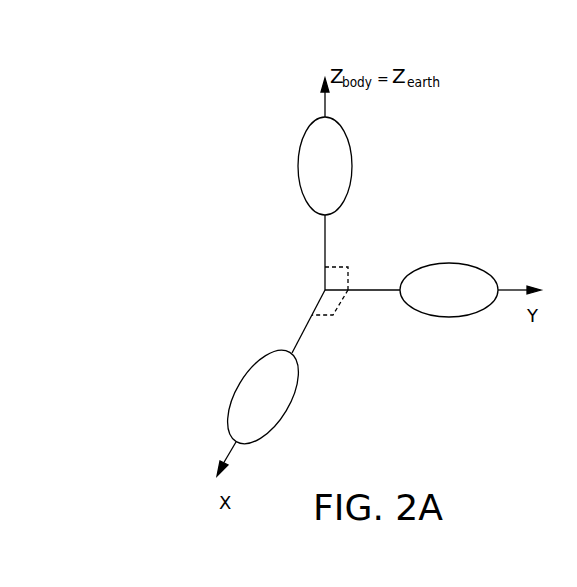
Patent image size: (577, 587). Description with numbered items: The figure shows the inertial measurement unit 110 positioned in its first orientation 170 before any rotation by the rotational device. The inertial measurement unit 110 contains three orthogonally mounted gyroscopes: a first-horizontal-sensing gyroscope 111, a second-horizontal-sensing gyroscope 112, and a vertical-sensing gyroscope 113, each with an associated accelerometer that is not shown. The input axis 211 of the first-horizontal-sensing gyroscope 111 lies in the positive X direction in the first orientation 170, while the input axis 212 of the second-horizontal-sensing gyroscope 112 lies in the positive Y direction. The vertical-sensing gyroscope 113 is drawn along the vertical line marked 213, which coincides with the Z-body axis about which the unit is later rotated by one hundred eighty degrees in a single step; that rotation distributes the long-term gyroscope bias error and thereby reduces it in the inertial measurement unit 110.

The inertial measurement unit 110 is at (427, 123).
The first orientation 170 is at (504, 139).
The first-horizontal-sensing gyroscope 111 is at (242, 380).
The second-horizontal-sensing gyroscope 112 is at (448, 263).
The vertical-sensing gyroscope 113 is at (302, 132).
The input axis of the first-horizontal-sensing gyroscope 211 is at (292, 342).
The input axis of the second-horizontal-sensing gyroscope 212 is at (384, 289).
The Z sensor axis 213 is at (326, 229).